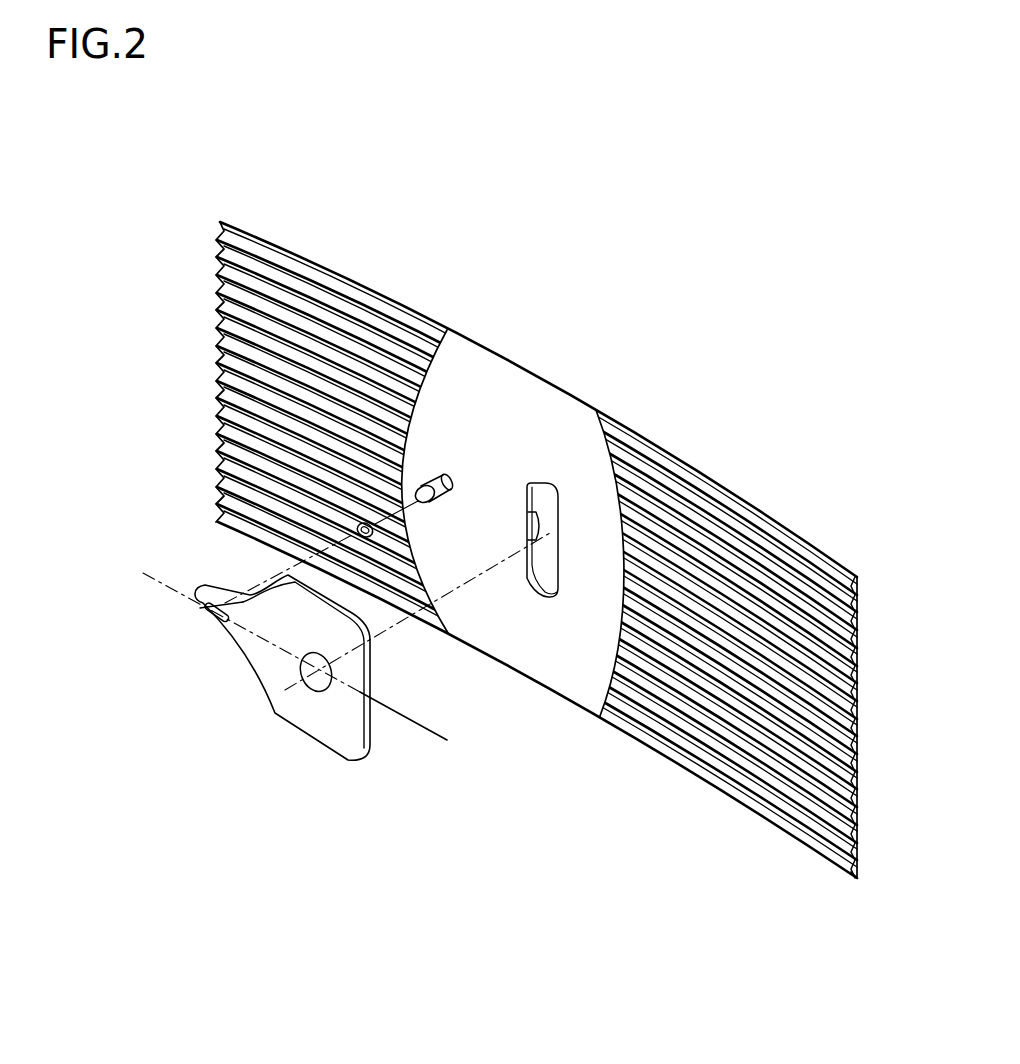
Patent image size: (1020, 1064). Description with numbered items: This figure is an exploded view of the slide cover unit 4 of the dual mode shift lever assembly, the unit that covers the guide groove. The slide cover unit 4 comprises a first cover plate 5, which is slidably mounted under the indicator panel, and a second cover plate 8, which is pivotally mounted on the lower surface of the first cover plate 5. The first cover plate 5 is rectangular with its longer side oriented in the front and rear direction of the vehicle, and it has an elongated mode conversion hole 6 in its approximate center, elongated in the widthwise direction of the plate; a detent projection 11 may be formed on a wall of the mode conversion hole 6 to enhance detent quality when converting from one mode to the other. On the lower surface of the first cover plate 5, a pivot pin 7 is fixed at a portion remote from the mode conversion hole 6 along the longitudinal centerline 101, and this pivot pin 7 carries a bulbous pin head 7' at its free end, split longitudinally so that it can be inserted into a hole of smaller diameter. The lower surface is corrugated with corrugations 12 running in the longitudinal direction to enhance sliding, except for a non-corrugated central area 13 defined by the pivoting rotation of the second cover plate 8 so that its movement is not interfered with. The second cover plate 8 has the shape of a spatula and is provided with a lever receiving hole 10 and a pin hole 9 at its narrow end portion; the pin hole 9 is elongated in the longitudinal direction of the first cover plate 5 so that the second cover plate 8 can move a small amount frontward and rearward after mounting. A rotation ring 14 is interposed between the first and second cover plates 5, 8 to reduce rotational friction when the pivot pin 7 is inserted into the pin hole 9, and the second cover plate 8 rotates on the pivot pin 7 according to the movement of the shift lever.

The slide cover unit 4 is at (832, 468).
The first cover plate 5 is at (313, 263).
The mode conversion hole 6 is at (547, 498).
The pivot pin 7 is at (428, 405).
The bulbous pin head 7' is at (449, 530).
The second cover plate 8 is at (327, 733).
The pin hole 9 is at (207, 618).
The lever receiving hole 10 is at (315, 676).
The detent projection 11 is at (541, 528).
The corrugations 12 is at (246, 452).
The non-corrugated central area 13 is at (547, 672).
The rotation ring 14 is at (356, 528).
The longitudinal centerline 101 is at (417, 725).